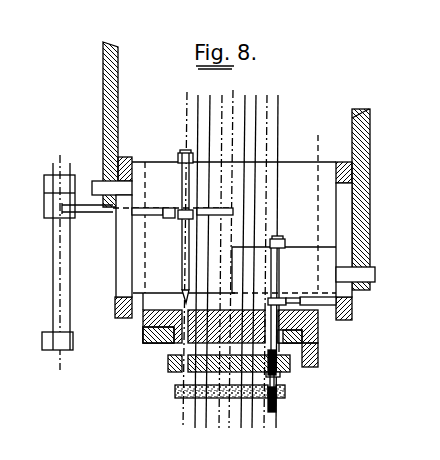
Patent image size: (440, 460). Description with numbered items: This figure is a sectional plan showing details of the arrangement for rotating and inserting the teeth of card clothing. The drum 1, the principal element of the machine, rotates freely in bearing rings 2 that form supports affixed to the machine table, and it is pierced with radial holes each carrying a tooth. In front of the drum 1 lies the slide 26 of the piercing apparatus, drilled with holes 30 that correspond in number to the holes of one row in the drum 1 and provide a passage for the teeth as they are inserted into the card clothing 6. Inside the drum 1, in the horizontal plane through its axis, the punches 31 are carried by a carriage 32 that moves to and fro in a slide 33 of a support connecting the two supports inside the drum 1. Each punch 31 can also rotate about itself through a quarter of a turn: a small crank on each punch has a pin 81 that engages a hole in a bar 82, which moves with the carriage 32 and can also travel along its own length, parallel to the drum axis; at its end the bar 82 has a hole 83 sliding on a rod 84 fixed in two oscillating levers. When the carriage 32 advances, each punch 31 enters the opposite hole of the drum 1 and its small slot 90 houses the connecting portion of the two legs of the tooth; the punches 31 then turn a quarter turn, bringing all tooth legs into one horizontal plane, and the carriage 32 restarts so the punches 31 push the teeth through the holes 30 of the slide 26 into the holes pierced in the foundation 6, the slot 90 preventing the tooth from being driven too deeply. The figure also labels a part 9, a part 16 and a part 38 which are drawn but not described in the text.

The drum 1 is at (315, 323).
The bearing rings 2 is at (143, 335).
The card clothing 6 is at (213, 399).
The leg 9 is at (319, 362).
The side wall 16 is at (353, 120).
The slide 26 is at (288, 372).
The holes 30 is at (168, 365).
The punches 31 is at (183, 253).
The carriage 32 is at (226, 186).
The slide 33 is at (118, 274).
The rod 38 is at (277, 411).
The pin 81 is at (176, 218).
The bar 82 is at (92, 213).
The hole 83 is at (47, 201).
The rod 84 is at (66, 281).
The small slot 90 is at (184, 300).